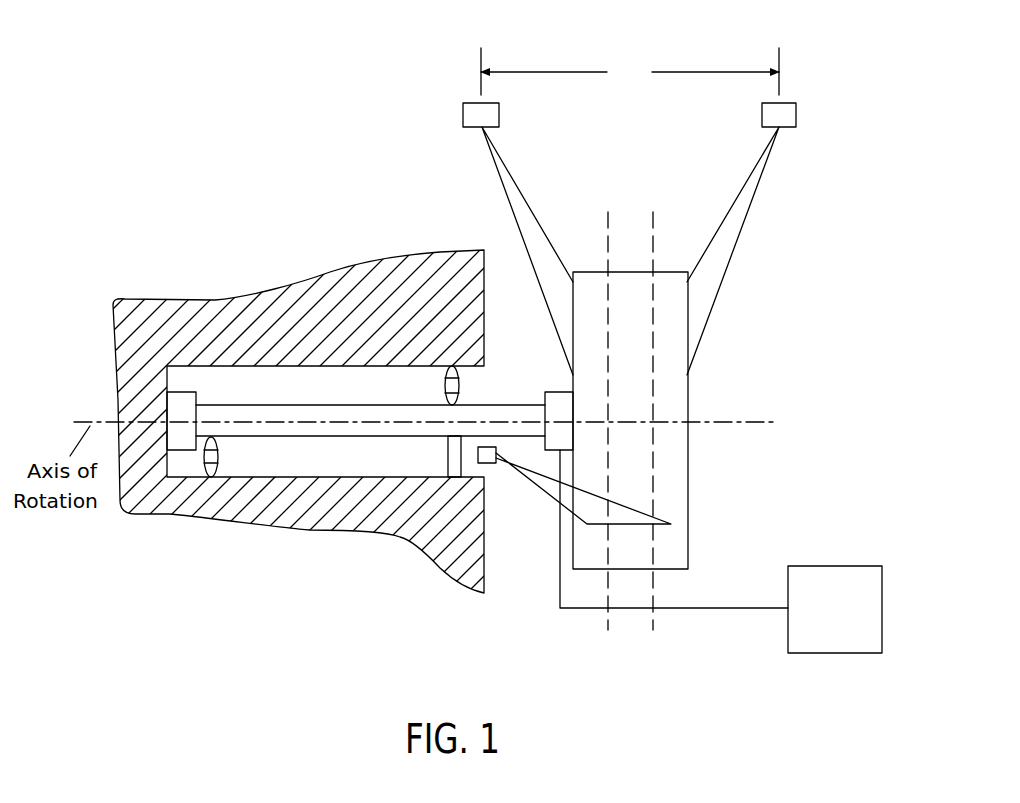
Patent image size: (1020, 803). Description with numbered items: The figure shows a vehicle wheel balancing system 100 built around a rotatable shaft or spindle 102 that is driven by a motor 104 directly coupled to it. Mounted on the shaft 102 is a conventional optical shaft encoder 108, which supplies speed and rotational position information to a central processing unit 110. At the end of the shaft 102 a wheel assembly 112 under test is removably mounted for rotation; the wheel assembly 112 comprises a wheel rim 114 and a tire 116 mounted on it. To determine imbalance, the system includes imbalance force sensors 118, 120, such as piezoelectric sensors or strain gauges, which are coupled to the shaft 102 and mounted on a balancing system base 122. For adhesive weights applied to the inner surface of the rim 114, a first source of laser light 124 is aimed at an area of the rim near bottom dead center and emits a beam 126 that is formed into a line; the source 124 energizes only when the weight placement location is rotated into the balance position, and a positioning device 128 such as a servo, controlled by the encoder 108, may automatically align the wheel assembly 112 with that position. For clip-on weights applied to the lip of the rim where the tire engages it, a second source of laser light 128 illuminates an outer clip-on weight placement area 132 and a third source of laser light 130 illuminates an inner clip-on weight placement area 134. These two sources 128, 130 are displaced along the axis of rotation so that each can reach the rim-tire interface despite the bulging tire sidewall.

The balancing system 100 is at (290, 102).
The shaft 102 is at (370, 437).
The motor 104 is at (187, 400).
The optical shaft encoder 108 is at (562, 392).
The central processing unit 110 is at (835, 609).
The wheel assembly 112 is at (672, 414).
The wheel rim 114 is at (688, 378).
The tire 116 is at (686, 266).
The imbalance force sensor 118 is at (445, 386).
The imbalance force sensor 120 is at (219, 457).
The balancing system base 122 is at (317, 521).
The first source of laser light 124 is at (495, 464).
The beam 126 is at (543, 490).
The second source of laser light 128 is at (623, 290).
The third source of laser light 130 is at (522, 239).
The outer clip-on weight placement area 132 is at (688, 327).
The inner clip-on weight placement area 134 is at (573, 312).